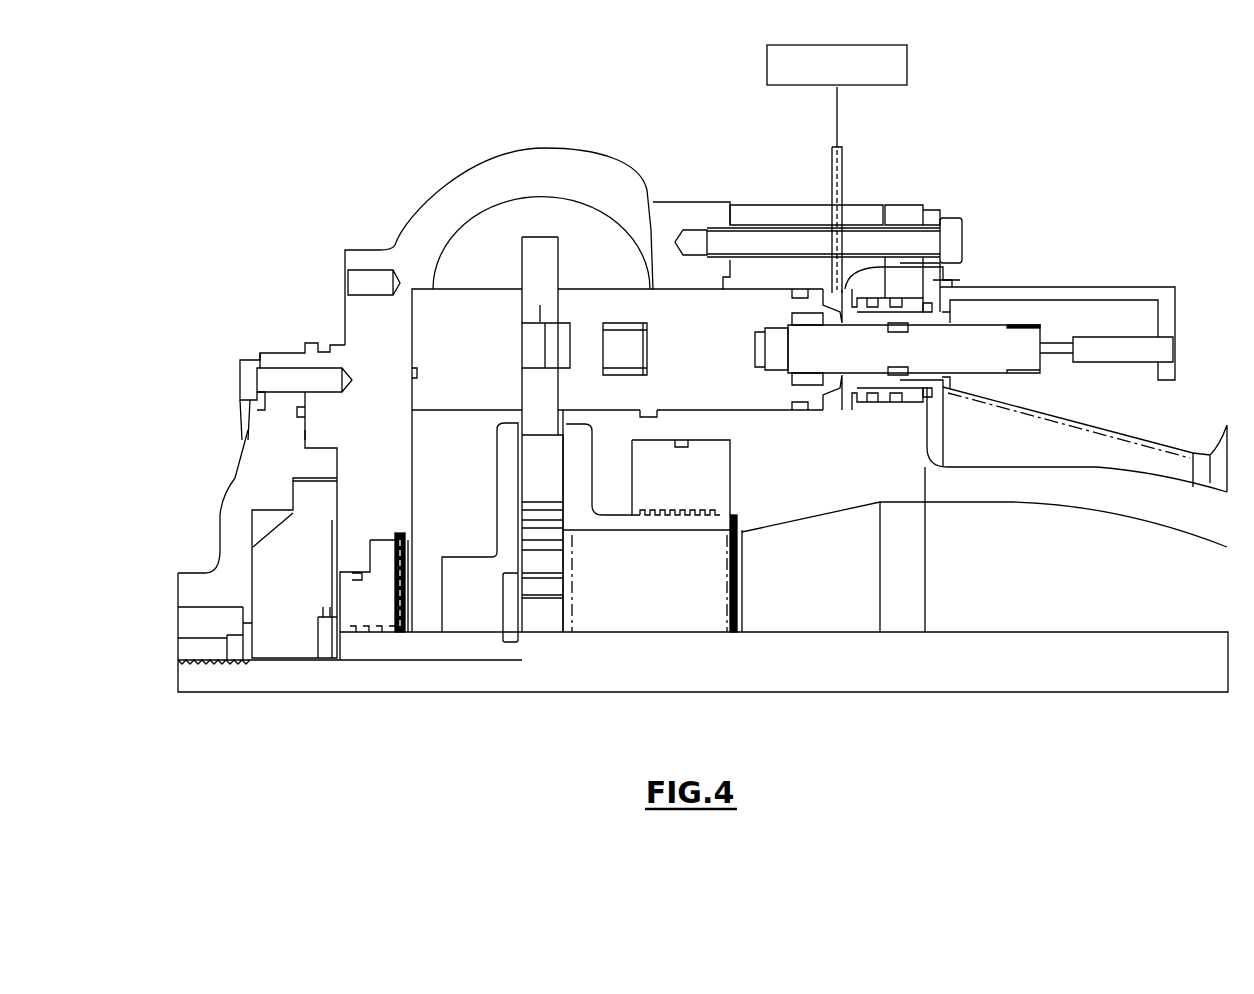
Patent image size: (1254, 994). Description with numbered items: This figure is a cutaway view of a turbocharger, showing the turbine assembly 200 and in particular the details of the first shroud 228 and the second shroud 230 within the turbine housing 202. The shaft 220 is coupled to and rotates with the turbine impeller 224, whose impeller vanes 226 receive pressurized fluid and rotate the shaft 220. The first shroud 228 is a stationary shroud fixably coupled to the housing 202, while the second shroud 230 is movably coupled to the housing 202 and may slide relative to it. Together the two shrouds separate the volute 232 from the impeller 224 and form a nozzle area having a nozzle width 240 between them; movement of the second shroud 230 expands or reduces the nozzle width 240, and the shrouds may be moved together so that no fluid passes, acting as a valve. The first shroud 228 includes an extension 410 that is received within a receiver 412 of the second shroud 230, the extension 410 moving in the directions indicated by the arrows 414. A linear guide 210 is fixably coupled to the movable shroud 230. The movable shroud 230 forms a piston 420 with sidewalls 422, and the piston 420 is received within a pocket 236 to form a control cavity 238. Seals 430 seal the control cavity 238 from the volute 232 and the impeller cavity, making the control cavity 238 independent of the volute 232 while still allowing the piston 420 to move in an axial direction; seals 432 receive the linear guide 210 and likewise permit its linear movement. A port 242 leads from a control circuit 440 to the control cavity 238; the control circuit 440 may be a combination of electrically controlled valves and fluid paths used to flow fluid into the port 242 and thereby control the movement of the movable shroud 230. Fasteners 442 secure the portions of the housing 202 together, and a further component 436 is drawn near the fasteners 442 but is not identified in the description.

The turbine assembly 200 is at (270, 232).
The turbine housing 202 is at (566, 184).
The linear guide 210 is at (974, 362).
The shaft 220 is at (1078, 667).
The turbine impeller 224 is at (667, 532).
The impeller vanes 226 is at (561, 472).
The first shroud 228 is at (489, 324).
The second shroud 230 is at (722, 329).
The volute 232 is at (561, 225).
The pocket 236 is at (702, 290).
The control cavity 238 is at (838, 302).
The nozzle width 240 is at (561, 262).
The port 242 is at (845, 163).
The extension 410 is at (541, 303).
The receiver 412 is at (617, 369).
The arrows 414 is at (606, 352).
The piston 420 is at (657, 290).
The sidewalls 422 is at (743, 411).
The seals 430 is at (647, 413).
The seals 432 is at (902, 376).
The adjuster 436 is at (903, 266).
The control circuit 440 is at (767, 63).
The fasteners 442 is at (953, 228).